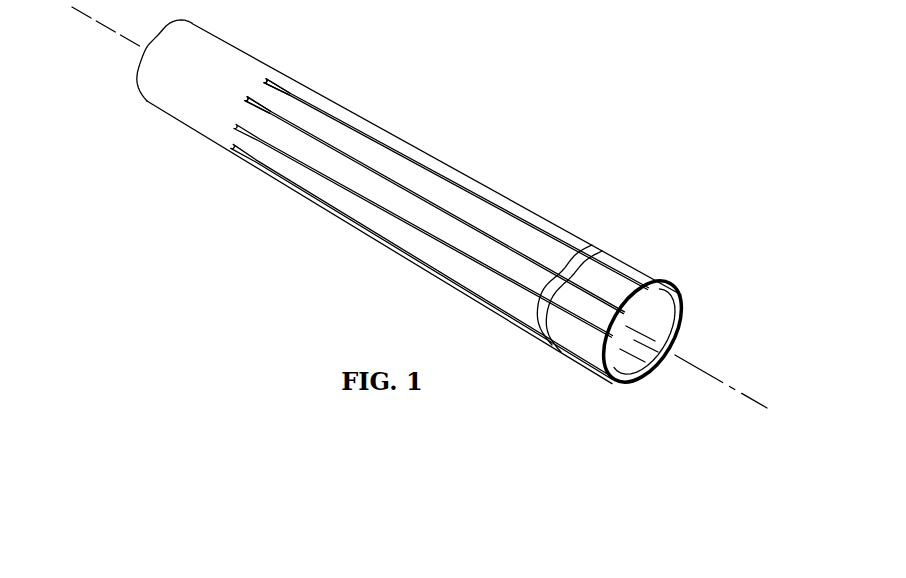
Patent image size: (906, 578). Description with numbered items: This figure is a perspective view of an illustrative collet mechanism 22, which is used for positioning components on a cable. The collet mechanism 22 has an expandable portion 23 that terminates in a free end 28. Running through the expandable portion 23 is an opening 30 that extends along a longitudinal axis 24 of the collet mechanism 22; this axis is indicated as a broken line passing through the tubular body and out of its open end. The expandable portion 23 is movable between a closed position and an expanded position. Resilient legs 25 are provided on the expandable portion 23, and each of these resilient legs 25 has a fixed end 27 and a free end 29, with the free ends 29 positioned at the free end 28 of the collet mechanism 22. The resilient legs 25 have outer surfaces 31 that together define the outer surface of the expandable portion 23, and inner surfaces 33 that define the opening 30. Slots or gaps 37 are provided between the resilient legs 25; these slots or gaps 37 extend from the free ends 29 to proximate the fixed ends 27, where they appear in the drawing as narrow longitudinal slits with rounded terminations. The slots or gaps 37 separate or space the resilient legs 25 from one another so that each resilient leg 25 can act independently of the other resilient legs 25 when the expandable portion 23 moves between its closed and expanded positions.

The collet mechanism 22 is at (418, 82).
The expandable portion 23 is at (489, 182).
The longitudinal axis 24 is at (733, 388).
The resilient legs 25 is at (512, 275).
The fixed ends 27 is at (281, 106).
The free end 28 is at (683, 300).
The free ends 29 is at (641, 281).
The opening 30 is at (672, 333).
The outer surfaces 31 is at (380, 192).
The inner surfaces 33 is at (623, 350).
The slots or gaps 37 is at (410, 188).